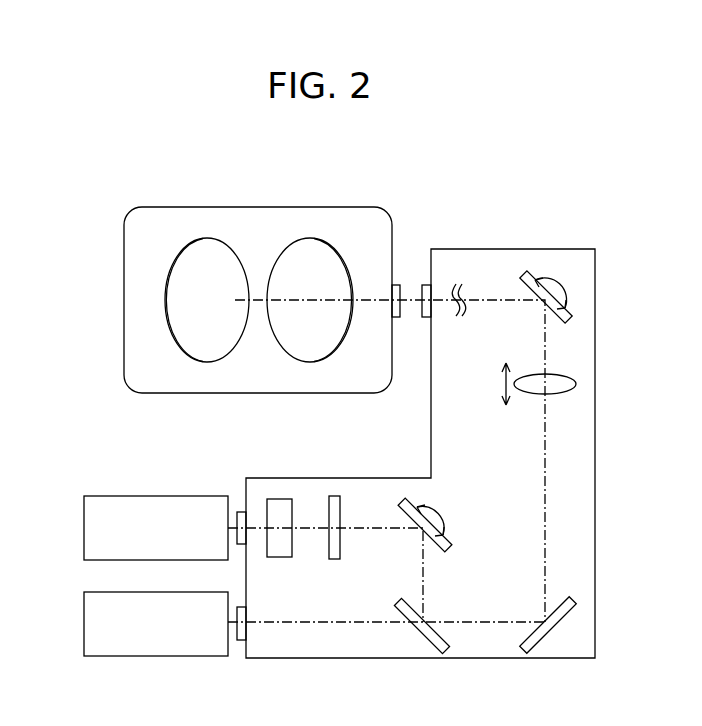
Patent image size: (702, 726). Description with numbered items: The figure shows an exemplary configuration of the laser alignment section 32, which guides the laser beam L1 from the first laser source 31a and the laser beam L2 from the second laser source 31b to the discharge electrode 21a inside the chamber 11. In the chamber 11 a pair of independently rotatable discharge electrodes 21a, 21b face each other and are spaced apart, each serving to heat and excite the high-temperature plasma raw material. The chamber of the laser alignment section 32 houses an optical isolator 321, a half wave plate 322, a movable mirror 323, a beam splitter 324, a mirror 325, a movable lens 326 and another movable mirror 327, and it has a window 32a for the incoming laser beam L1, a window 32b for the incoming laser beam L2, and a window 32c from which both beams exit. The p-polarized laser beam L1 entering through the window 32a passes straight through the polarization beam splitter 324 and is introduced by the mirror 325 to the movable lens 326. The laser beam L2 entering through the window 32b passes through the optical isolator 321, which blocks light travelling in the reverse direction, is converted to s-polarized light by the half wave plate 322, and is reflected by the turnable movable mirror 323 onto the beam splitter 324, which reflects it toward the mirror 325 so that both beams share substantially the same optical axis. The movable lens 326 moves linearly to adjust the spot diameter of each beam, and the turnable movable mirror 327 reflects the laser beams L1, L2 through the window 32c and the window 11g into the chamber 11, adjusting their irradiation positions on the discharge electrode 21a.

The chamber 11 is at (124, 270).
The discharge electrode 21a is at (190, 243).
The discharge electrode 21b is at (292, 242).
The window 11g is at (398, 285).
The window 32c is at (426, 285).
The laser alignment section 32 is at (557, 660).
The window 32b is at (238, 511).
The window 32a is at (240, 642).
The optical isolator 321 is at (276, 499).
The half wave plate 322 is at (331, 496).
The movable mirror 323 is at (404, 502).
The beam splitter 324 is at (418, 650).
The mirror 325 is at (563, 620).
The movable lens 326 is at (576, 384).
The movable mirror 327 is at (572, 318).
The first laser source 31a is at (84, 620).
The second laser source 31b is at (84, 523).
The laser beam L1 is at (305, 620).
The laser beam L2 is at (430, 575).